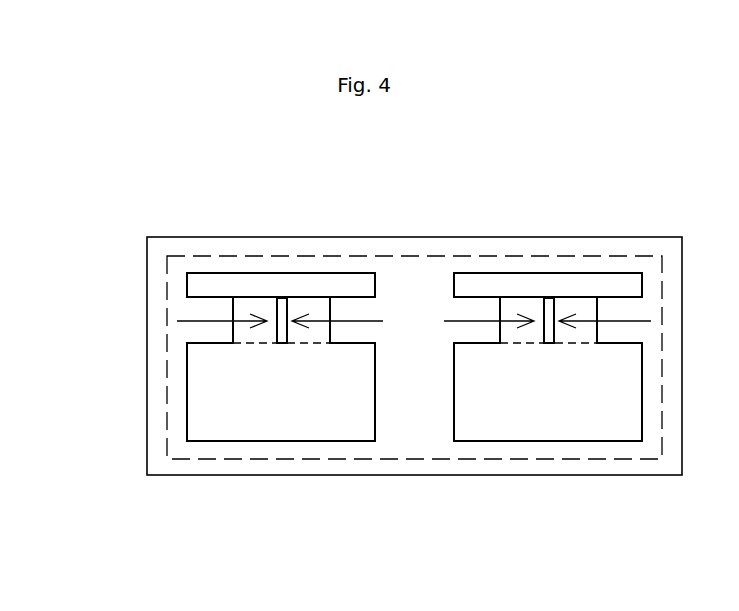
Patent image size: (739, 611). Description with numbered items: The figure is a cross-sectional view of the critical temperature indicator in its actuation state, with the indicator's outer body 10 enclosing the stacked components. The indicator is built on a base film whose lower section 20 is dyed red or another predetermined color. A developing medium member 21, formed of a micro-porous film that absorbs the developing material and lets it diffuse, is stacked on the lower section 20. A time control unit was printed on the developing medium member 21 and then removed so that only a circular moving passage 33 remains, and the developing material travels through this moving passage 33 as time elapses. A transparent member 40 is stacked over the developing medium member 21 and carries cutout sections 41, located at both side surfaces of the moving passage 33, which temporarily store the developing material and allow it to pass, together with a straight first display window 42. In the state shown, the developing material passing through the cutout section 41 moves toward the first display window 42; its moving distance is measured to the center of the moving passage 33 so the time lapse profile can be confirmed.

The piezoelectric device 10 is at (661, 243).
The lower section 20 is at (147, 437).
The developing medium member 21 is at (167, 387).
The moving passage 33 is at (247, 296).
The transparent member 40 is at (281, 433).
The cutout section 41 is at (213, 307).
The first display window 42 is at (282, 300).